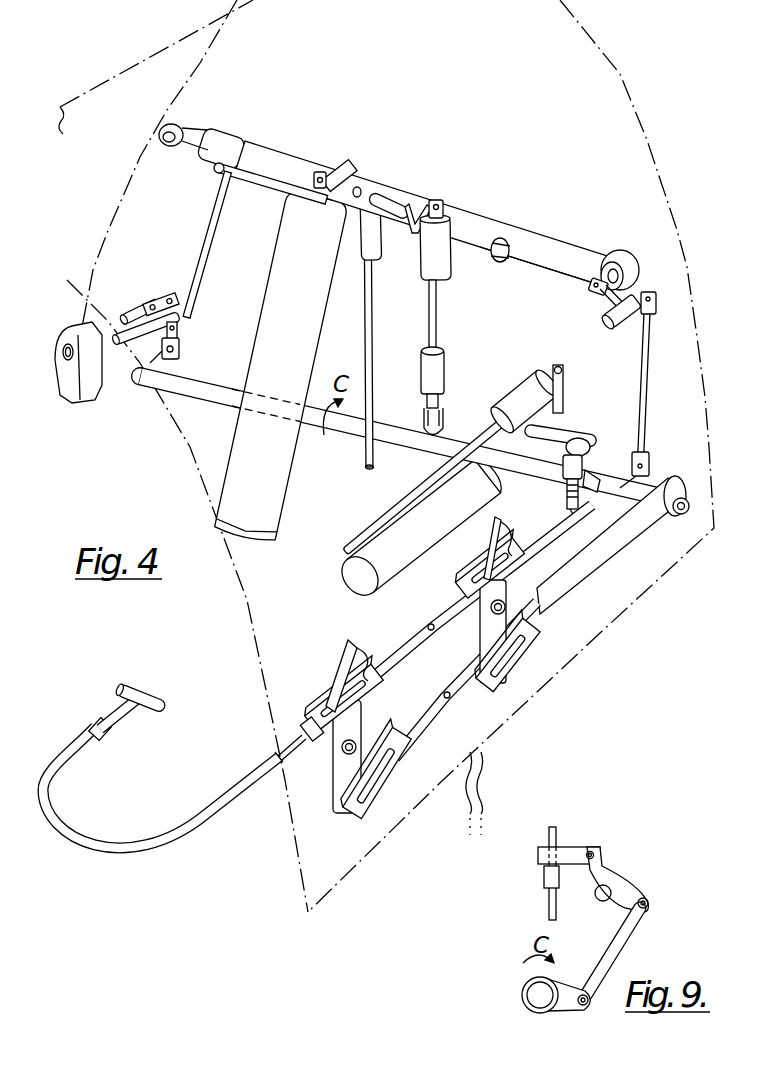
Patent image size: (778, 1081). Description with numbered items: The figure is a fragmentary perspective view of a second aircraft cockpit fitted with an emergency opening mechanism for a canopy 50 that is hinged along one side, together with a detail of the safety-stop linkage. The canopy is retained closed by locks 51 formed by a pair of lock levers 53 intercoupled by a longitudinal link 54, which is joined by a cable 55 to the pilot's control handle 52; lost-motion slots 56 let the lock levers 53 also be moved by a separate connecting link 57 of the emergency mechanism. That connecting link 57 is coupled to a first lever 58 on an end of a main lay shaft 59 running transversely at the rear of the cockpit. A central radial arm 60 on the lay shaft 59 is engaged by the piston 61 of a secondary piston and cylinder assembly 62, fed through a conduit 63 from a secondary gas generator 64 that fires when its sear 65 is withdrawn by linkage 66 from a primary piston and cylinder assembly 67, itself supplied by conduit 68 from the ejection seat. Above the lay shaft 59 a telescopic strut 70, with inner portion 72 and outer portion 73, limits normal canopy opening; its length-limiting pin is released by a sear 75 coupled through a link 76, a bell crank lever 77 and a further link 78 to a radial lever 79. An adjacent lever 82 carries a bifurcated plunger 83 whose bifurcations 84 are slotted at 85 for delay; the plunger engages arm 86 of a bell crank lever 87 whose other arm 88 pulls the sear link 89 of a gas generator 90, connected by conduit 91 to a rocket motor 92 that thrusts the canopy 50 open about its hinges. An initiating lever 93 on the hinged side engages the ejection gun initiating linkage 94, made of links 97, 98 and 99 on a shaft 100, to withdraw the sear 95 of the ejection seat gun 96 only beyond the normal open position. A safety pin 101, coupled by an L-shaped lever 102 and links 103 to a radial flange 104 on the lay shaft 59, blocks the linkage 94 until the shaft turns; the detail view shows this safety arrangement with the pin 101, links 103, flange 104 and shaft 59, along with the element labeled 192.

In FIG. 4, the canopy 50 is at (185, 398).
In FIG. 4, the locks 51 is at (355, 648).
In FIG. 4, the control handle 52 is at (152, 702).
In FIG. 4, the lock levers 53 is at (357, 737).
In FIG. 4, the link 54 is at (428, 624).
In FIG. 4, the cable 55 is at (285, 754).
In FIG. 4, the slots 56 is at (336, 702).
In FIG. 4, the connecting link 57 is at (446, 702).
In FIG. 4, the first lever 58 is at (684, 492).
In FIG. 4, the main lay shaft 59 is at (410, 447).
In FIG. 9, the main lay shaft 59 is at (532, 998).
In FIG. 4, the arm 60 is at (444, 422).
In FIG. 4, the piston 61 is at (440, 401).
In FIG. 4, the secondary piston and cylinder assembly 62 is at (445, 363).
In FIG. 4, the conduit 63 is at (441, 309).
In FIG. 4, the secondary pressure fluid generator 64 is at (449, 266).
In FIG. 4, the sear 65 is at (444, 205).
In FIG. 4, the linkage 66 is at (392, 198).
In FIG. 4, the primary piston and cylinder assembly 67 is at (380, 249).
In FIG. 4, the conduit 68 is at (373, 324).
In FIG. 4, the telescopic strut 70 is at (244, 143).
In FIG. 4, the inner portion 72 is at (197, 131).
In FIG. 4, the outer portion 73 is at (595, 256).
In FIG. 4, the sear 75 is at (500, 240).
In FIG. 4, the link 76 is at (540, 252).
In FIG. 4, the bell crank lever 77 is at (605, 302).
In FIG. 4, the further link 78 is at (648, 368).
In FIG. 4, the lever 79 is at (648, 470).
In FIG. 4, the lever 82 is at (591, 491).
In FIG. 4, the bifurcated plunger 83 is at (565, 473).
In FIG. 4, the bifurcations 84 is at (570, 501).
In FIG. 4, the slot 85 is at (575, 513).
In FIG. 4, the arm 86 is at (597, 441).
In FIG. 4, the bell crank lever 87 is at (584, 440).
In FIG. 4, the arm 88 is at (563, 401).
In FIG. 4, the sear link 89 is at (559, 366).
In FIG. 4, the pressure fluid generator 90 is at (521, 384).
In FIG. 4, the conduit 91 is at (383, 516).
In FIG. 4, the rocket motor 92 is at (453, 518).
In FIG. 4, the initiating lever 93 is at (78, 333).
In FIG. 4, the initiating linkage 94 is at (247, 240).
In FIG. 4, the sear 95 is at (322, 170).
In FIG. 4, the ejection seat gun 96 is at (281, 250).
In FIG. 4, the link 97 is at (185, 322).
In FIG. 9, the link 97 is at (552, 828).
In FIG. 4, the link 98 is at (220, 201).
In FIG. 4, the link 99 is at (345, 168).
In FIG. 4, the shaft 100 is at (214, 171).
In FIG. 4, the safety pin 101 is at (128, 308).
In FIG. 9, the safety pin 101 is at (570, 850).
In FIG. 4, the L-shaped lever 102 is at (165, 300).
In FIG. 4, the links 103 is at (189, 312).
In FIG. 9, the links 103 is at (627, 946).
In FIG. 4, the flange 104 is at (180, 357).
In FIG. 9, the flange 104 is at (577, 1009).
In FIG. 9, the lever 192 is at (621, 890).